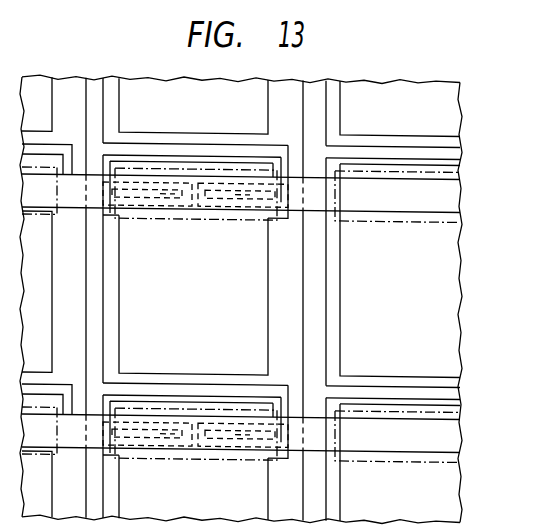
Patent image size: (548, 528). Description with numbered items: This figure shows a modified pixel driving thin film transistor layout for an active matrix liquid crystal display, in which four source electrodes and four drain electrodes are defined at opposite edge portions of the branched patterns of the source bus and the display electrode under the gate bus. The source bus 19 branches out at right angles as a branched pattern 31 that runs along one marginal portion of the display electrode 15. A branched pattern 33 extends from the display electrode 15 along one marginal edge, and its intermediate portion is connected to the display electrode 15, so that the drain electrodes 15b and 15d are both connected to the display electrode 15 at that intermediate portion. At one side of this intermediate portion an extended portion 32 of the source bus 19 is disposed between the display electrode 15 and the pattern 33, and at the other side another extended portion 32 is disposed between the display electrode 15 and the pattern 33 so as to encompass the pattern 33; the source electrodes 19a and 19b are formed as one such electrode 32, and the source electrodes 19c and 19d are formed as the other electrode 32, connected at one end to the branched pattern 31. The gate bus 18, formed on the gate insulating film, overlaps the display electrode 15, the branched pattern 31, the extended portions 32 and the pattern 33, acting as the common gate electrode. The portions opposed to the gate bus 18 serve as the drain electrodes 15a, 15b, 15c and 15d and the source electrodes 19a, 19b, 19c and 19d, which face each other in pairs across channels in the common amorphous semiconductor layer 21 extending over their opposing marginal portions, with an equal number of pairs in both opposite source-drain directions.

The display electrode 15 is at (257, 296).
The drain electrode 15a is at (135, 210).
The drain electrode 15b is at (133, 178).
The drain electrode 15c is at (233, 210).
The drain electrode 15d is at (243, 160).
The gate bus 18 is at (400, 212).
The source bus 19 is at (95, 313).
The source electrode 19a is at (165, 210).
The source electrode 19b is at (157, 160).
The source electrode 19c is at (203, 212).
The source electrode 19d is at (195, 158).
The amorphous semiconductor layer 21 is at (247, 212).
The branched pattern 31 is at (173, 165).
The extended portion 32 is at (280, 180).
The branched pattern 33 is at (257, 157).